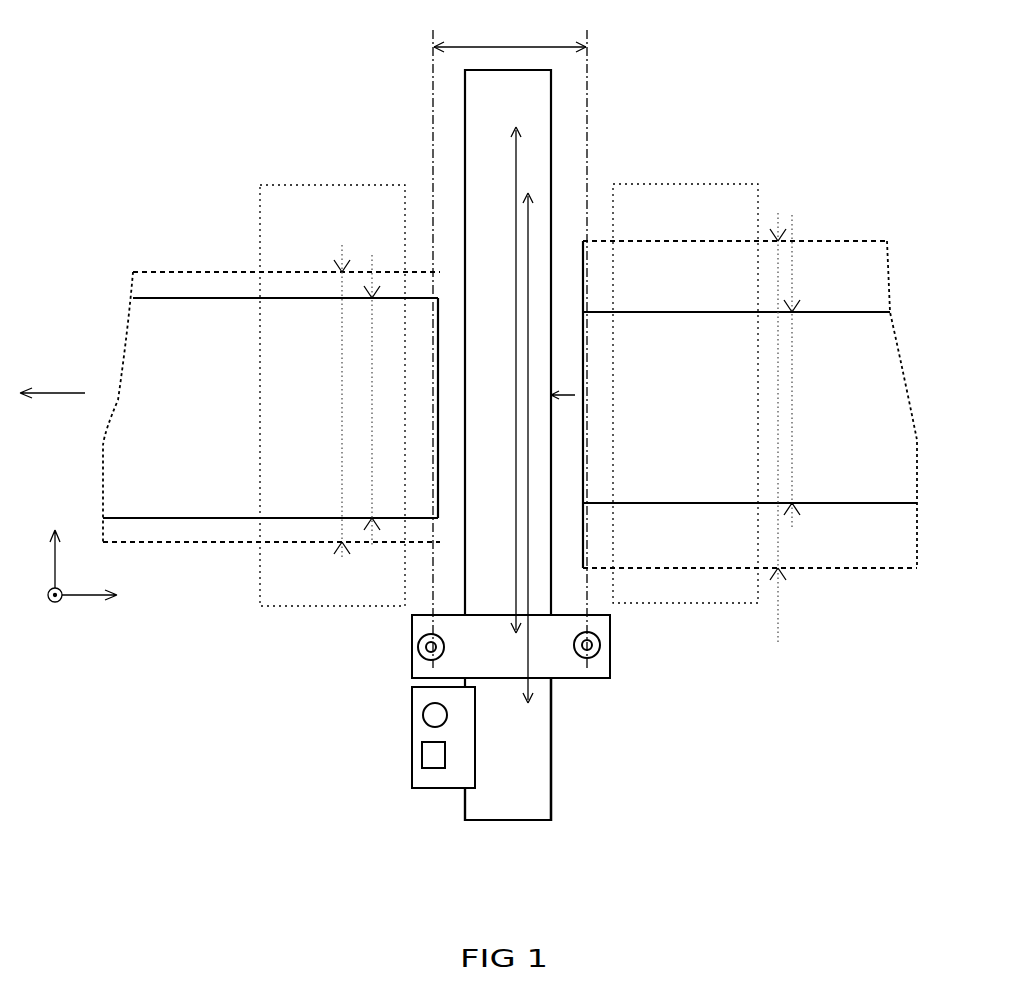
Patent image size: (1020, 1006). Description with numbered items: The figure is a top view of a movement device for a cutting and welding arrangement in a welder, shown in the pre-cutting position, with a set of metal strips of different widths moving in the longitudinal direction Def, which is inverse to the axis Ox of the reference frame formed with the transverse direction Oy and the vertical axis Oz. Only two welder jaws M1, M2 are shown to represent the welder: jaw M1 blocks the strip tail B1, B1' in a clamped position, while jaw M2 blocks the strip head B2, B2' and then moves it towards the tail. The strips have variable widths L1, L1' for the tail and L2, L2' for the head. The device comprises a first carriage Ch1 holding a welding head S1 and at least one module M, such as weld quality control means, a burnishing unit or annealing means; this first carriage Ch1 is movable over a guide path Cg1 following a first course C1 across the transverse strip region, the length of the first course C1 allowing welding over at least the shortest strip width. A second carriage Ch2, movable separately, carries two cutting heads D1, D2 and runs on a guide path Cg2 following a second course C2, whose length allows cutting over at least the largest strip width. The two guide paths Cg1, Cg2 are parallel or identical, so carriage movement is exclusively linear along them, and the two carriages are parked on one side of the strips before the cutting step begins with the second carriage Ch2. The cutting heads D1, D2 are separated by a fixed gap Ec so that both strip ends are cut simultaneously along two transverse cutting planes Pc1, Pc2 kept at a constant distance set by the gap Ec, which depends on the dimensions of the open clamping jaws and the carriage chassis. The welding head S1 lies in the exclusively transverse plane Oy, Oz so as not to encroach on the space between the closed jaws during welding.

The gap Ec is at (510, 36).
The transverse cutting plane Pc1 is at (433, 58).
The transverse cutting plane Pc2 is at (587, 58).
The welder jaw M1 is at (350, 185).
The welder jaw M2 is at (650, 184).
The second course C2 is at (516, 147).
The first course C1 is at (530, 662).
The first metal strip tail B1 is at (270, 363).
The strip tail of different width B1' is at (271, 361).
The strip width L1 is at (370, 396).
The strip width L1' is at (358, 560).
The second metal strip head B2 is at (750, 381).
The strip head of different width B2' is at (750, 346).
The strip width L2 is at (799, 429).
The strip width L2' is at (796, 568).
The second carriage Ch2 is at (612, 660).
The first carriage Ch1 is at (478, 730).
The cutting head D1 is at (418, 647).
The cutting head D2 is at (612, 642).
The welding head S1 is at (420, 712).
The module M is at (420, 757).
The guide path Cg1 is at (530, 795).
The guide path Cg2 is at (610, 808).
The longitudinal direction Def is at (52, 377).
The axis Ox is at (95, 617).
The transverse direction Oy is at (36, 552).
The axis Oz is at (38, 611).